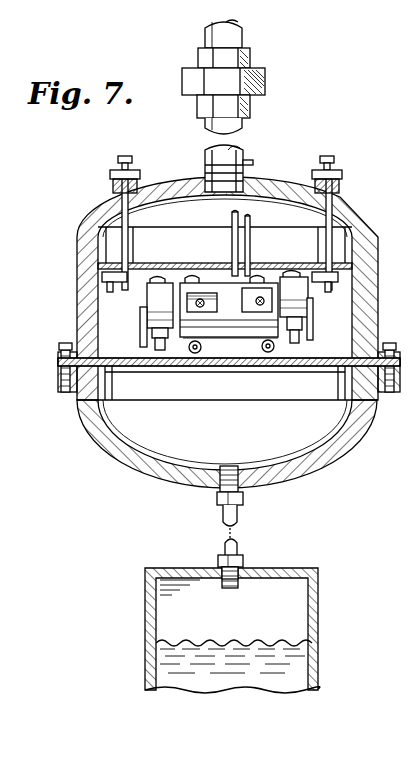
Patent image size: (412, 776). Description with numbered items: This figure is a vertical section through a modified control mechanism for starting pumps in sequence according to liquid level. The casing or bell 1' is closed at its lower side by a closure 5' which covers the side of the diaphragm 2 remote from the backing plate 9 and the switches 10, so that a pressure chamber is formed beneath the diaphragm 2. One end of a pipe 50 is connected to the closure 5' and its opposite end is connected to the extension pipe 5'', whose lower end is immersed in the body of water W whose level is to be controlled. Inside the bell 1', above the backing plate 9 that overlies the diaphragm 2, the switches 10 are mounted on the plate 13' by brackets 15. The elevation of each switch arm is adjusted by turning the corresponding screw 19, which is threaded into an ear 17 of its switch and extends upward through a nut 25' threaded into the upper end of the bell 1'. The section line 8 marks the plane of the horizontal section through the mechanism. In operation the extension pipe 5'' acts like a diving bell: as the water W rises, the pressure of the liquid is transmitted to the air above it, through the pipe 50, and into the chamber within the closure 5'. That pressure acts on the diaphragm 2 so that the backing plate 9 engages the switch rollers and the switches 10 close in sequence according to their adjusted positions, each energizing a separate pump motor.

The casing 1' is at (234, 287).
The diaphragm 2 is at (195, 366).
The closure 5' is at (226, 445).
The extension pipe 5'' is at (249, 630).
The section line 8 is at (45, 298).
The backing plate 9 is at (314, 356).
The switch 10 is at (166, 309).
The plate 13' is at (225, 248).
The bracket 15 is at (197, 272).
The ear 17 is at (110, 281).
The screw 19 is at (125, 262).
The nut 25' is at (197, 171).
The pipe 50 is at (238, 508).
The water W is at (217, 650).